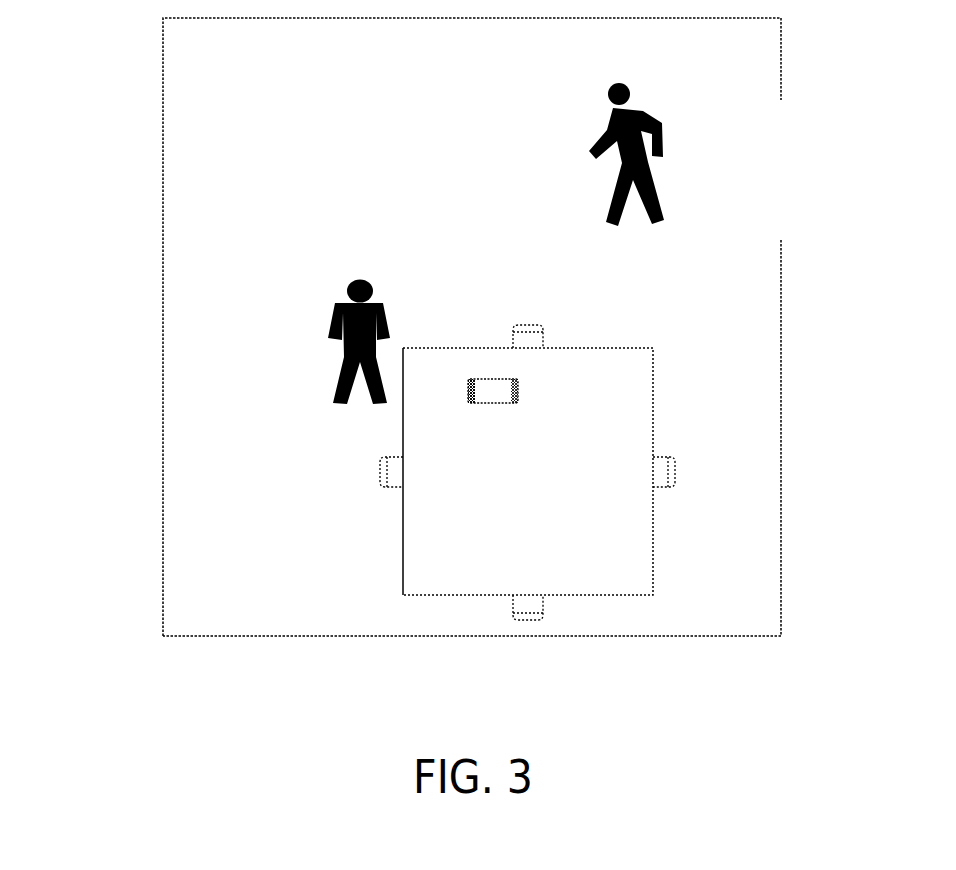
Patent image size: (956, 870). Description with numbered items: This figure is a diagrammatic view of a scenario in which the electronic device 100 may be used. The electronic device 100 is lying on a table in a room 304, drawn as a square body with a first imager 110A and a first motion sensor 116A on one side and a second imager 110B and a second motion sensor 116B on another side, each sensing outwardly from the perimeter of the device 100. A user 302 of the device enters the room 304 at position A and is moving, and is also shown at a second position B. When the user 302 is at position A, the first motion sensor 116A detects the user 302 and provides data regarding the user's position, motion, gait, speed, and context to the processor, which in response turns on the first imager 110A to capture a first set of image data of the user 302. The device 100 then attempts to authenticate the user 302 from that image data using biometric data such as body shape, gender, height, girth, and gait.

The electronic device 100 is at (488, 360).
The first imager 110A is at (550, 383).
The first motion sensor 116A is at (518, 380).
The second imager 110B is at (444, 340).
The second motion sensor 116B is at (470, 378).
The user 302 is at (542, 113).
The room 304 is at (125, 260).